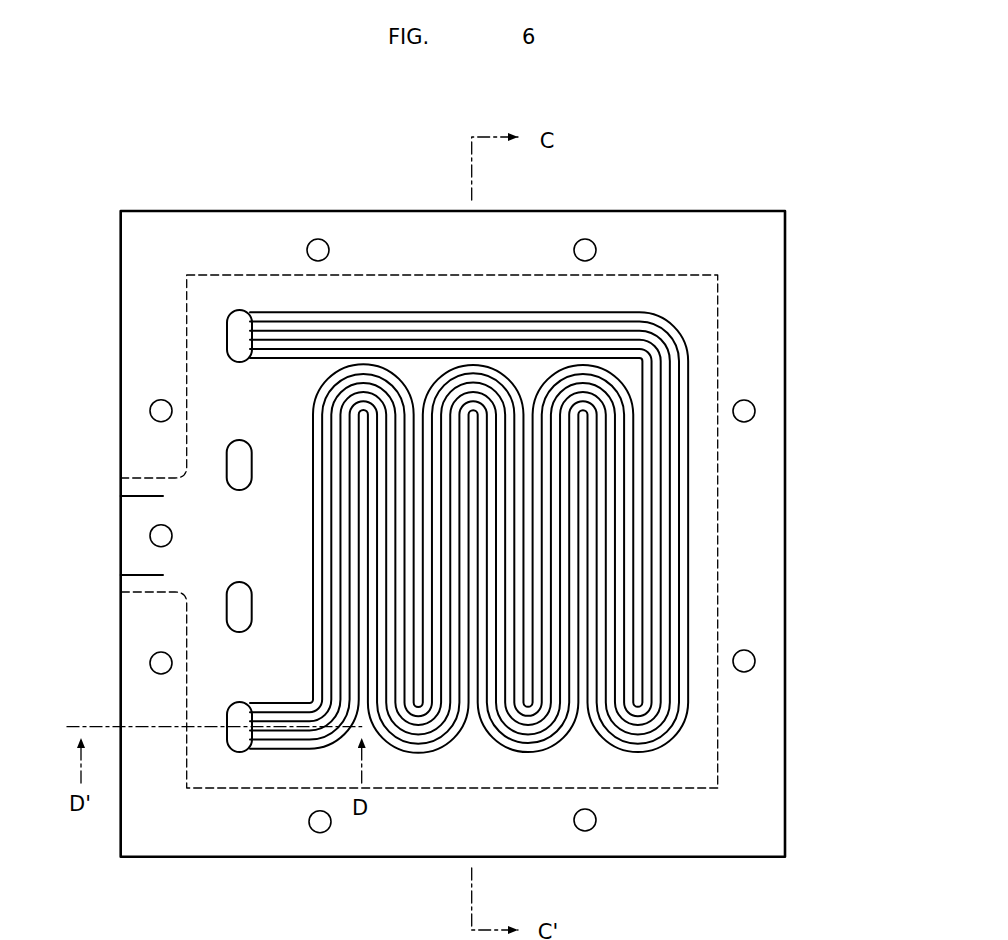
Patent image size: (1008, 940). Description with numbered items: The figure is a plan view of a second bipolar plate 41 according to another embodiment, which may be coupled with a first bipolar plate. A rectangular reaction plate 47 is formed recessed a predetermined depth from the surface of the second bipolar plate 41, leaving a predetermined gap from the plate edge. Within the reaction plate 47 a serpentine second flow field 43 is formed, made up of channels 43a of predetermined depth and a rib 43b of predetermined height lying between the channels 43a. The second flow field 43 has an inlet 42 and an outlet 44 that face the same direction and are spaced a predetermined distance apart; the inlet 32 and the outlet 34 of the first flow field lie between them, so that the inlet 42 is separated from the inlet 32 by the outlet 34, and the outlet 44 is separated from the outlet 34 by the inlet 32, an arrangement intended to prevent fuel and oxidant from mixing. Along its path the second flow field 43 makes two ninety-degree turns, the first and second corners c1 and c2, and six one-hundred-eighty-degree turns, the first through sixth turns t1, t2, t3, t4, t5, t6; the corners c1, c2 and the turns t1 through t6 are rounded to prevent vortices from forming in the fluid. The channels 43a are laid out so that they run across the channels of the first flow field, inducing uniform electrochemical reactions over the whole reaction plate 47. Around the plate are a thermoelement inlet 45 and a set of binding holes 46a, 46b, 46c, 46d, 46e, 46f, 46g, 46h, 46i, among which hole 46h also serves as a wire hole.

The second bipolar plate 41 is at (797, 932).
The inlet of the second flow field 42 is at (237, 325).
The second flow field 43 is at (574, 532).
The channels 43a is at (688, 519).
The rib 43b is at (676, 570).
The outlet of the second flow field 44 is at (236, 742).
The thermoelement inlet 45 is at (137, 574).
The reaction plate 47 is at (695, 767).
The inlet of the first flow field 32 is at (232, 608).
The outlet of the first flow field 34 is at (232, 465).
The binding hole 46a is at (320, 826).
The binding hole 46b is at (587, 826).
The binding hole 46c is at (747, 661).
The binding hole 46d is at (747, 411).
The binding hole 46e is at (585, 250).
The binding hole 46f is at (318, 250).
The binding hole 46g is at (158, 410).
The wire hole 46h is at (163, 536).
The binding hole 46i is at (158, 663).
The first corner c1 is at (690, 316).
The second corner c2 is at (307, 694).
The first turn t1 is at (643, 762).
The second turn t2 is at (624, 371).
The third turn t3 is at (527, 762).
The fourth turn t4 is at (514, 371).
The fifth turn t5 is at (421, 762).
The sixth turn t6 is at (402, 371).